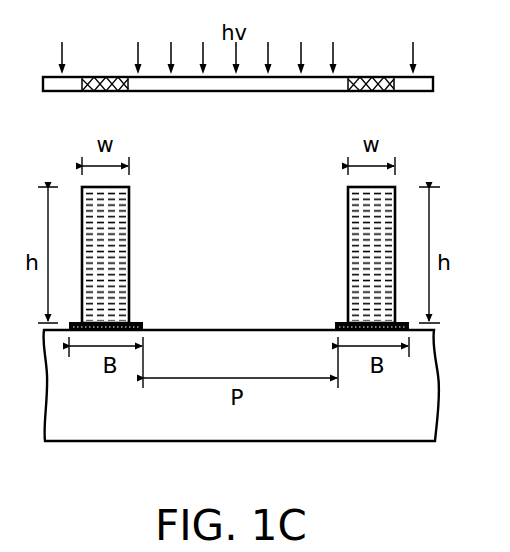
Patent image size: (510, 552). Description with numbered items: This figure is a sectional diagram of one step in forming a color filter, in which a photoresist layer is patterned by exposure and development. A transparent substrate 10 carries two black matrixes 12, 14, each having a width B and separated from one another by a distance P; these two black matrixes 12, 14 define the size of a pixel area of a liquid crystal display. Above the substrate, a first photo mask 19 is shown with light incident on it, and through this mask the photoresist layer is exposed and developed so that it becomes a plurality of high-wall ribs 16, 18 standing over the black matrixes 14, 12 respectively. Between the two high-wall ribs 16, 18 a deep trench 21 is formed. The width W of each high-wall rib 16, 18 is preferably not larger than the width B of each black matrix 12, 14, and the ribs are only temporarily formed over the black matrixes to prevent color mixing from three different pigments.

The transparent substrate 10 is at (395, 429).
The black matrix 12 is at (136, 322).
The black matrix 14 is at (340, 322).
The high-wall rib 16 is at (347, 208).
The high-wall rib 18 is at (130, 207).
The first photo mask 19 is at (238, 92).
The deep trench 21 is at (228, 281).